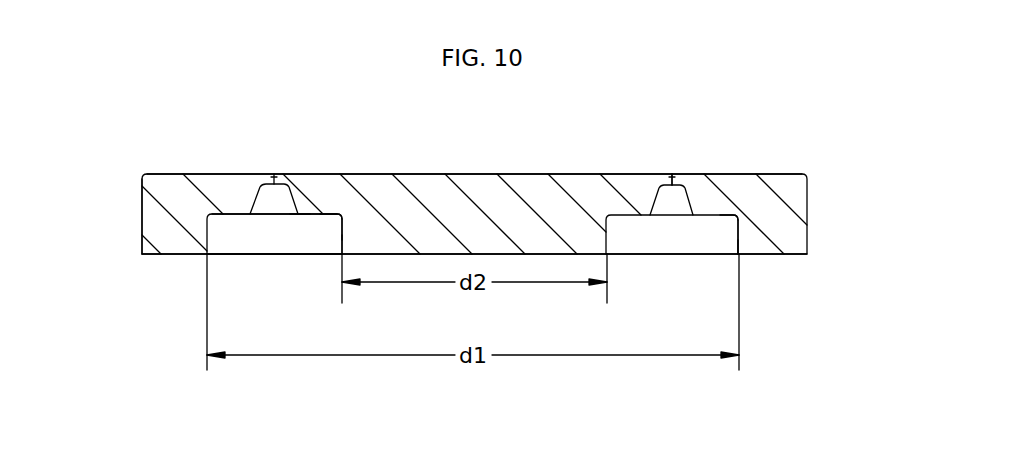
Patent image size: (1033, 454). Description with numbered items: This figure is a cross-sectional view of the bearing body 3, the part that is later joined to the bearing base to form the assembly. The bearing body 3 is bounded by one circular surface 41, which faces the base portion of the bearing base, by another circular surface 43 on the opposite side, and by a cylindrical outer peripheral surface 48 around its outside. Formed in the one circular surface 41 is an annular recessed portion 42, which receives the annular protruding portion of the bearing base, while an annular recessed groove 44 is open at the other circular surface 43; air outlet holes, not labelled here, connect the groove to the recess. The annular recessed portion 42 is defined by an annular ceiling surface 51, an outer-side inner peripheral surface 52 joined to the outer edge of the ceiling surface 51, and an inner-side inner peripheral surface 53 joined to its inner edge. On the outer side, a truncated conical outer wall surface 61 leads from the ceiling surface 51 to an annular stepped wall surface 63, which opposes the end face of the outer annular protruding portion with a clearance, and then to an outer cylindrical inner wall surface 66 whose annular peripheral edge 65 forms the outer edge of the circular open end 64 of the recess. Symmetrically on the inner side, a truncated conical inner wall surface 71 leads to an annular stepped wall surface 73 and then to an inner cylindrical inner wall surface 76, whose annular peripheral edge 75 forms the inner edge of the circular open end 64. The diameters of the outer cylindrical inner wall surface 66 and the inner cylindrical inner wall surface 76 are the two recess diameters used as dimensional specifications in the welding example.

The bearing body 3 is at (806, 175).
The one circular surface 41 is at (755, 257).
The annular recessed portion 42 is at (247, 228).
The another circular surface 43 is at (448, 174).
The annular recessed groove 44 is at (673, 174).
The cylindrical outer peripheral surface 48 is at (142, 226).
The annular ceiling surface 51 is at (292, 193).
The outer-side inner peripheral surface 52 is at (701, 227).
The inner-side inner peripheral surface 53 is at (308, 229).
The truncated conical outer wall surface 61 is at (694, 198).
The annular stepped wall surface 63 is at (737, 224).
The circular open end 64 is at (247, 254).
The annular peripheral edge 65 is at (737, 258).
The outer cylindrical inner wall surface 66 is at (739, 242).
The truncated conical inner wall surface 71 is at (301, 213).
The annular stepped wall surface 73 is at (335, 218).
The annular peripheral edge 75 is at (339, 242).
The inner cylindrical inner wall surface 76 is at (343, 233).